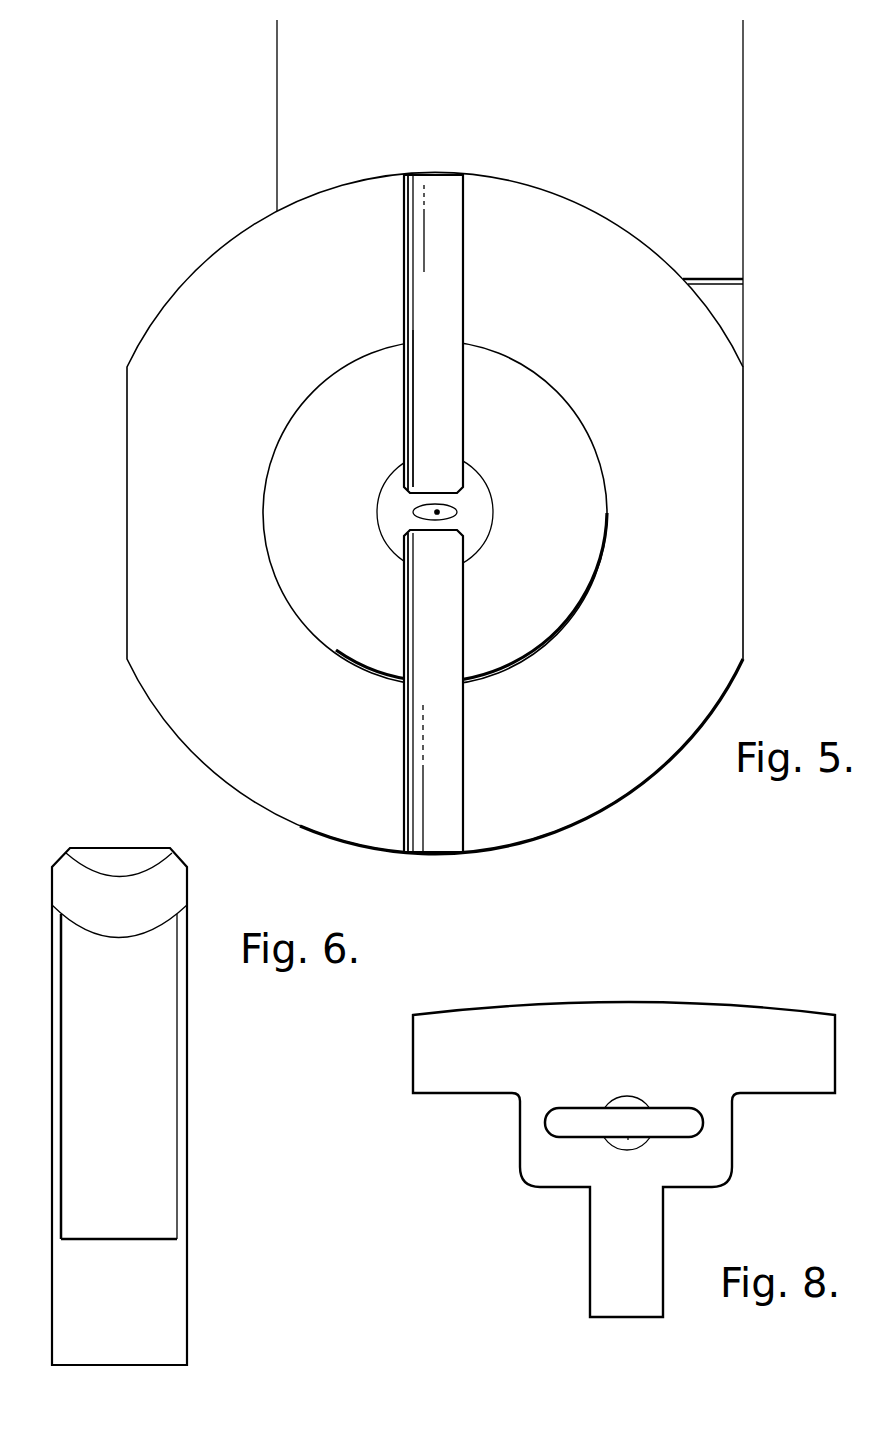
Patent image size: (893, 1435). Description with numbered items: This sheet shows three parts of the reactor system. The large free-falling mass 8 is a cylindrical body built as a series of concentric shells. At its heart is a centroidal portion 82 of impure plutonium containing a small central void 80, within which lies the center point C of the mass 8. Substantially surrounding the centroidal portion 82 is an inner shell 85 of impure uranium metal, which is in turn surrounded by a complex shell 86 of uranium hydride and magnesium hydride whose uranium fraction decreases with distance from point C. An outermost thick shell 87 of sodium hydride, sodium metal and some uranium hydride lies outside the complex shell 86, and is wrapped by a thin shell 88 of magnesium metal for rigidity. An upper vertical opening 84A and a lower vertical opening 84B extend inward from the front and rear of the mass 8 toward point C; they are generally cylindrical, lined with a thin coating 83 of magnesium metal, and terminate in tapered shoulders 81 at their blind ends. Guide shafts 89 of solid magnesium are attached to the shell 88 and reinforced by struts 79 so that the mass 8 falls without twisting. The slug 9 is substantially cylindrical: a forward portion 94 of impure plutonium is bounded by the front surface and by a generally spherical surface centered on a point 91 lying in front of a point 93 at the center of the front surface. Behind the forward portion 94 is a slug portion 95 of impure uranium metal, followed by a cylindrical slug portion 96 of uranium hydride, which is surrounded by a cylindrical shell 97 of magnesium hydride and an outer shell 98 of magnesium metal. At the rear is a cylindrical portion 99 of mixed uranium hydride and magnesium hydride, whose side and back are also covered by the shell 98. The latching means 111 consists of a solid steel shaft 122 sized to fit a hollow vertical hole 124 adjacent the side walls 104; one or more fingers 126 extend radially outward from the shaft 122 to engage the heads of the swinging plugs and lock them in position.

In FIG. 5, the large free-falling mass 8 is at (170, 284).
In FIG. 5, the guide shafts 89 is at (277, 108).
In FIG. 5, the struts 79 is at (712, 277).
In FIG. 5, the shell of magnesium metal 88 is at (596, 820).
In FIG. 5, the outermost thick shell 87 is at (567, 760).
In FIG. 5, the complex shell 86 is at (349, 429).
In FIG. 5, the inner shell 85 is at (493, 508).
In FIG. 5, the upper vertical opening 84A is at (462, 316).
In FIG. 5, the lower vertical opening 84B is at (455, 681).
In FIG. 5, the thin coating of magnesium metal 83 is at (408, 438).
In FIG. 5, the central void 80 is at (412, 508).
In FIG. 5, the center point C is at (440, 510).
In FIG. 5, the centroidal portion 82 is at (407, 518).
In FIG. 5, the shoulders 81 is at (460, 530).
In FIG. 6, the slug 9 is at (199, 1057).
In FIG. 6, the point 91 is at (138, 931).
In FIG. 6, the point at the center of the front surface 93 is at (120, 848).
In FIG. 6, the forward portion 94 is at (90, 860).
In FIG. 6, the slug portion 95 is at (105, 909).
In FIG. 6, the slug portion 96 is at (132, 1039).
In FIG. 6, the cylindrical shell 97 is at (183, 1176).
In FIG. 6, the outer shell 98 is at (170, 1367).
In FIG. 6, the cylindrical portion 99 is at (131, 1309).
In FIG. 8, the side walls 104 is at (645, 1287).
In FIG. 8, the hollow vertical holes 124 is at (637, 1110).
In FIG. 8, the fingers 126 is at (557, 1135).
In FIG. 8, the solid shaft 122 is at (627, 1150).
In FIG. 8, the latching means 111 is at (597, 1147).